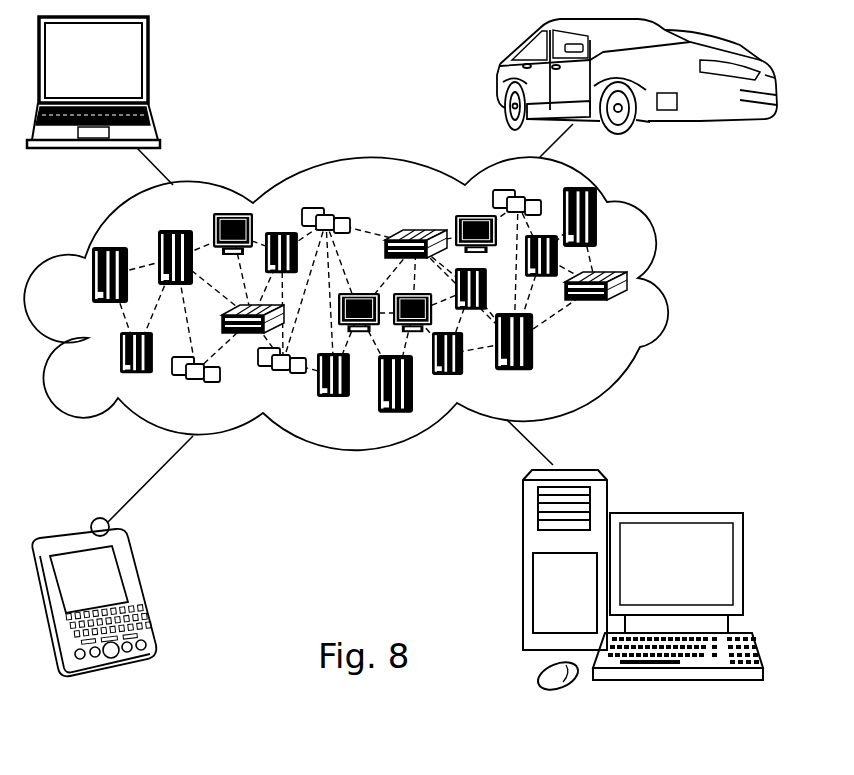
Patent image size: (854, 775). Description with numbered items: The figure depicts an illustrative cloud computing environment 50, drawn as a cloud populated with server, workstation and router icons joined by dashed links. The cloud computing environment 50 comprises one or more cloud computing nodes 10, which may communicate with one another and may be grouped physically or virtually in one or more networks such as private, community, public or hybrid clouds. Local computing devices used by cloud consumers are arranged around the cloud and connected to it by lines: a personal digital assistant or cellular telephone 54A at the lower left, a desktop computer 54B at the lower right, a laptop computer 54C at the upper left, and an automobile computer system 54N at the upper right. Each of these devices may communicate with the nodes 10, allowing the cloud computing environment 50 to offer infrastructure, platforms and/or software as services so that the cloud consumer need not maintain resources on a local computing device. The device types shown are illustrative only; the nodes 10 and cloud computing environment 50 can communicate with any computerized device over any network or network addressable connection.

The cloud computing node 10 is at (636, 311).
The cloud computing environment 50 is at (674, 287).
The personal digital assistant or cellular telephone 54A is at (140, 589).
The desktop computer 54B is at (676, 513).
The laptop computer 54C is at (148, 67).
The automobile computer system 54N is at (499, 66).